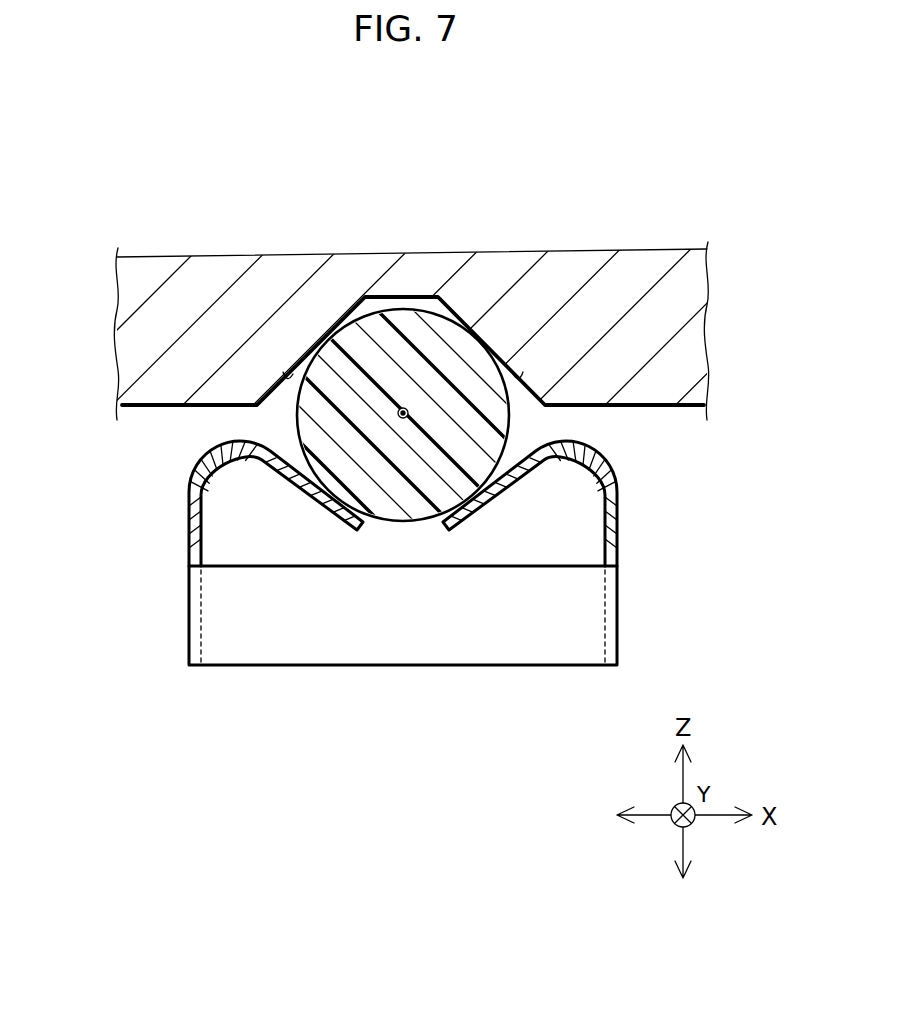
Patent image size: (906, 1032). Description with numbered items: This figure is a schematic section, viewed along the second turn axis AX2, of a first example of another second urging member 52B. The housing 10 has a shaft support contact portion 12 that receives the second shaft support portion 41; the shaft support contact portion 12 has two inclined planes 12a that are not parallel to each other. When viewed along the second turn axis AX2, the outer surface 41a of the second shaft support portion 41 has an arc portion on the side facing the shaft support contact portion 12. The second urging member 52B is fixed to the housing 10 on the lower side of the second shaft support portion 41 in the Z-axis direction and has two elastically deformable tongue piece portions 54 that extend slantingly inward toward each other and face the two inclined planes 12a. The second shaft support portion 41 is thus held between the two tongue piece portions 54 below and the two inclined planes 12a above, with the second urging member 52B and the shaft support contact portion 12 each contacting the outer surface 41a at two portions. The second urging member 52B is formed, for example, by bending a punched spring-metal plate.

The housing 10 is at (697, 300).
The shaft support contact portion 12 is at (489, 328).
The inclined plane 12a is at (294, 381).
The second shaft support portion 41 is at (413, 368).
The outer surface 41a is at (302, 443).
The second turn axis AX2 is at (397, 413).
The tongue piece portion 54 is at (313, 495).
The second urging member 52B is at (617, 541).